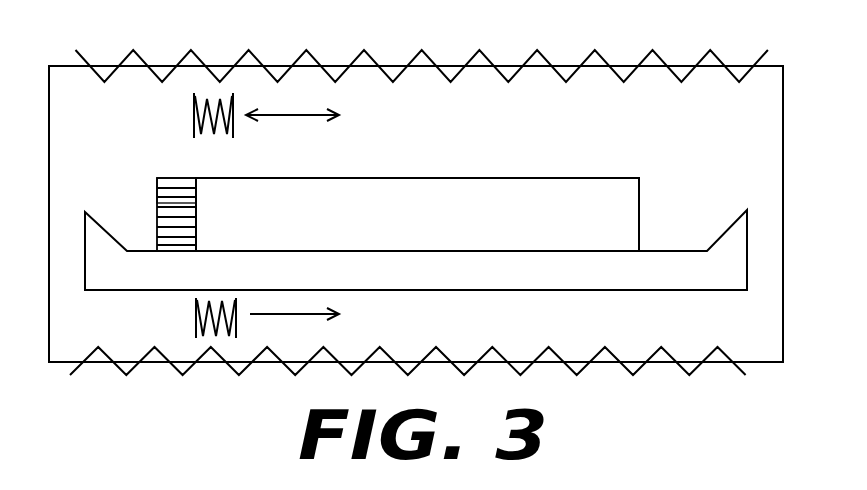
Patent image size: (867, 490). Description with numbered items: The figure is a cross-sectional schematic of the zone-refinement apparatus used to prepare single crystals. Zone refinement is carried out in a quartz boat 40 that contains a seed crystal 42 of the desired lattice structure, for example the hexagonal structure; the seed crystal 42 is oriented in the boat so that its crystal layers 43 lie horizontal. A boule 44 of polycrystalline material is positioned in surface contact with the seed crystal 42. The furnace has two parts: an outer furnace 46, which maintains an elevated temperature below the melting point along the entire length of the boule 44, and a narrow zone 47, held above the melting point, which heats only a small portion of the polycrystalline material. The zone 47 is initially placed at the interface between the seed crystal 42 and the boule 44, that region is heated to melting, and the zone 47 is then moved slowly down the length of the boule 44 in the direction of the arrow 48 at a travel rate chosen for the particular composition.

The quartz boat 40 is at (732, 259).
The seed crystal 42 is at (157, 218).
The crystal layers 43 is at (157, 199).
The boule 44 is at (622, 200).
The outer furnace 46 is at (720, 63).
The zone 47 is at (237, 87).
The arrow 48 is at (285, 113).